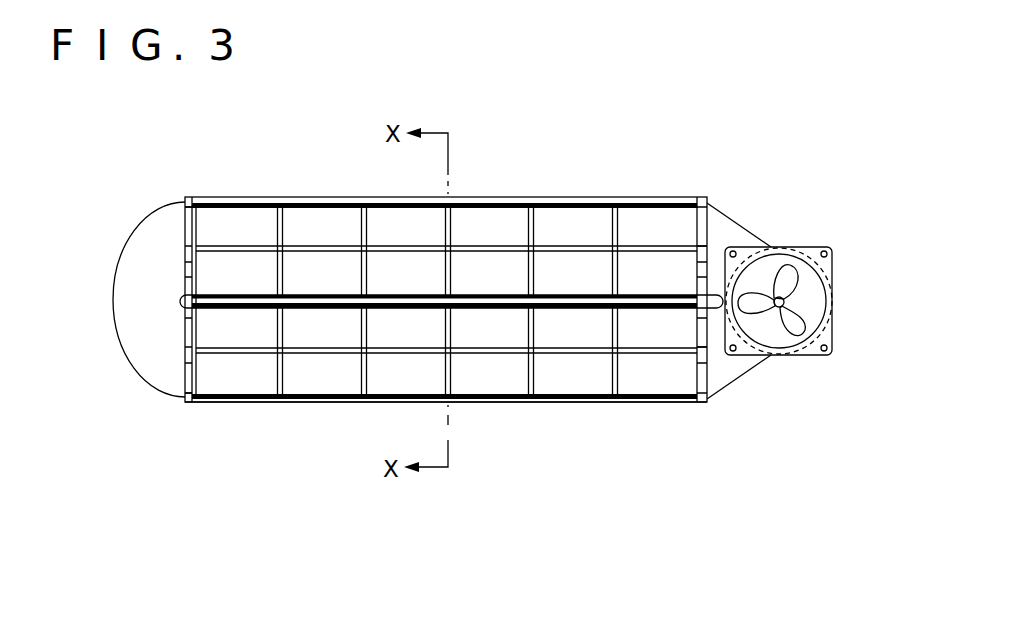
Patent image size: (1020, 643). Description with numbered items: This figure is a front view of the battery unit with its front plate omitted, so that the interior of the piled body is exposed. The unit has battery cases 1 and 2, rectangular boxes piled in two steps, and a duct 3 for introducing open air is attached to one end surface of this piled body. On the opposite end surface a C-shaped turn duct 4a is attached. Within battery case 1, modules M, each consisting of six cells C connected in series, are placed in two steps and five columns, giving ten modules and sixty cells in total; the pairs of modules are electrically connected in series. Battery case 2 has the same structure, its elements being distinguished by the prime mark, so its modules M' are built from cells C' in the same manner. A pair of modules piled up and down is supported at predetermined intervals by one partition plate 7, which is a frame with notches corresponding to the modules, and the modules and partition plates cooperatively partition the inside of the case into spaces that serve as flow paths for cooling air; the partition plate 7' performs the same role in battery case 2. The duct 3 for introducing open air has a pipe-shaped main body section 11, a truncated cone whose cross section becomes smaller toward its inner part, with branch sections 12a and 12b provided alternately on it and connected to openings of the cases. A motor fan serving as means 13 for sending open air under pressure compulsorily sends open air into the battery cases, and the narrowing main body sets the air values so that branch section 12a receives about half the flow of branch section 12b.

The battery case 1 is at (534, 197).
The battery case 2 is at (335, 403).
The duct for introducing open air 3 is at (797, 366).
The turn duct 4a is at (151, 396).
The partition plate 7 is at (444, 169).
The partition plate 7' is at (444, 433).
The main body section 11 is at (808, 262).
The branch section 12a is at (743, 377).
The branch section 12b is at (757, 233).
The means for sending open air under pressure 13 is at (800, 326).
The cell C is at (446, 223).
The cell C' is at (446, 375).
The module M is at (466, 186).
The module M' is at (446, 408).